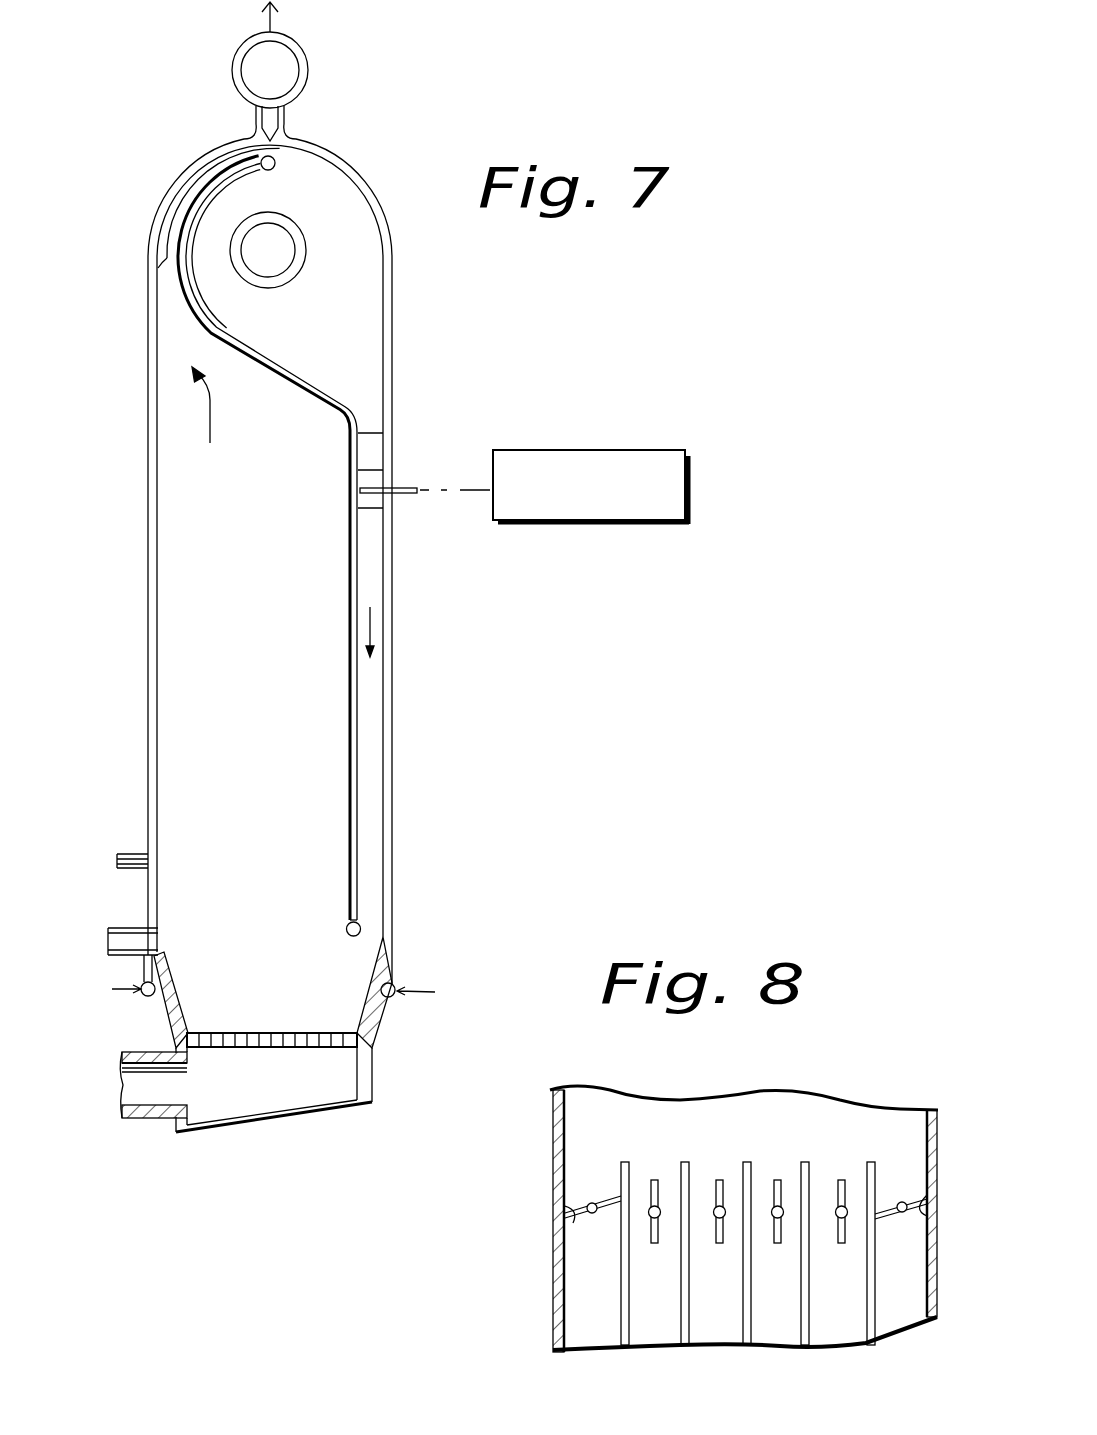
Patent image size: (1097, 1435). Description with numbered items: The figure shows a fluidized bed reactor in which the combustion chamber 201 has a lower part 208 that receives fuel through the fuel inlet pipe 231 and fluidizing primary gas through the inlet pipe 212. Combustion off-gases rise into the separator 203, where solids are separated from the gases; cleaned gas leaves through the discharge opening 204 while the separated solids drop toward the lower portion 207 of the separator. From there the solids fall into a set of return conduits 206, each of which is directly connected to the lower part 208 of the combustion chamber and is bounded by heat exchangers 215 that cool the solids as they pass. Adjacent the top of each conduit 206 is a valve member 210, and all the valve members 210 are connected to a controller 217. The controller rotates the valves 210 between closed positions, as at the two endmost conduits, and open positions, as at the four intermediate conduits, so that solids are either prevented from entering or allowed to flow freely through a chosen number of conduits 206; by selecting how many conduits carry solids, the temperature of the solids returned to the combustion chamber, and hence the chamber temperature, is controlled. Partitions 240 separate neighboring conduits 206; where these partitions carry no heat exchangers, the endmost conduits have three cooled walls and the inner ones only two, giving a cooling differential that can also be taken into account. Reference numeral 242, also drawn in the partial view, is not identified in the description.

In FIG. 7, the combustion chamber 201 is at (180, 472).
In FIG. 7, the separator 203 is at (285, 176).
In FIG. 7, the discharge opening 204 is at (292, 240).
In FIG. 7, the return conduit 206 is at (372, 580).
In FIG. 8, the return conduit 206 is at (900, 1280).
In FIG. 7, the lower portion of the separator 207 is at (362, 352).
In FIG. 7, the lower part of the combustion chamber 208 is at (327, 1008).
In FIG. 7, the valve member 210 is at (376, 485).
In FIG. 8, the valve member 210 is at (654, 1242).
In FIG. 7, the inlet pipe for primary gas 212 is at (133, 1086).
In FIG. 8, the heat exchanger 215 is at (553, 1158).
In FIG. 7, the controller 217 is at (645, 524).
In FIG. 7, the fuel inlet pipe 231 is at (125, 943).
In FIG. 8, the partition 240 is at (862, 1168).
In FIG. 8, the short tubes with balls 242 is at (750, 1133).